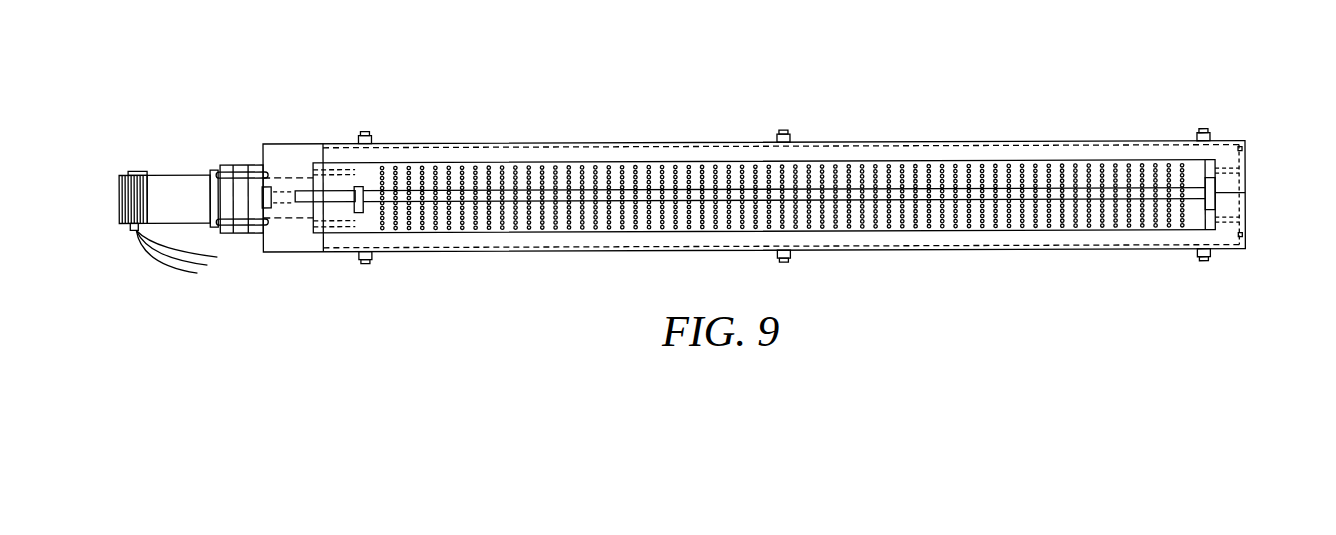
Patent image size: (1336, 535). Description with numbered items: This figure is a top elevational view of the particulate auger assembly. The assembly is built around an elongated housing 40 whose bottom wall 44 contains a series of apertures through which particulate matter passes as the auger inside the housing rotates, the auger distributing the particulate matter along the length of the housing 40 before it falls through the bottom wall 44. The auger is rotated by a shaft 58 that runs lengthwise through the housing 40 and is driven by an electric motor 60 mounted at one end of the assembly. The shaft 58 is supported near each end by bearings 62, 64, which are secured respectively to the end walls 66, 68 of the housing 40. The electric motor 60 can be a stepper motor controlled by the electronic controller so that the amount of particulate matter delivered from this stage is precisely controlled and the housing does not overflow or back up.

The housing 40 is at (489, 140).
The bottom wall 44 is at (964, 184).
The shaft 58 is at (305, 197).
The electric motor 60 is at (181, 200).
The bearing 62 is at (354, 189).
The bearing 64 is at (1204, 184).
The end wall 66 is at (266, 243).
The end wall 68 is at (1240, 223).